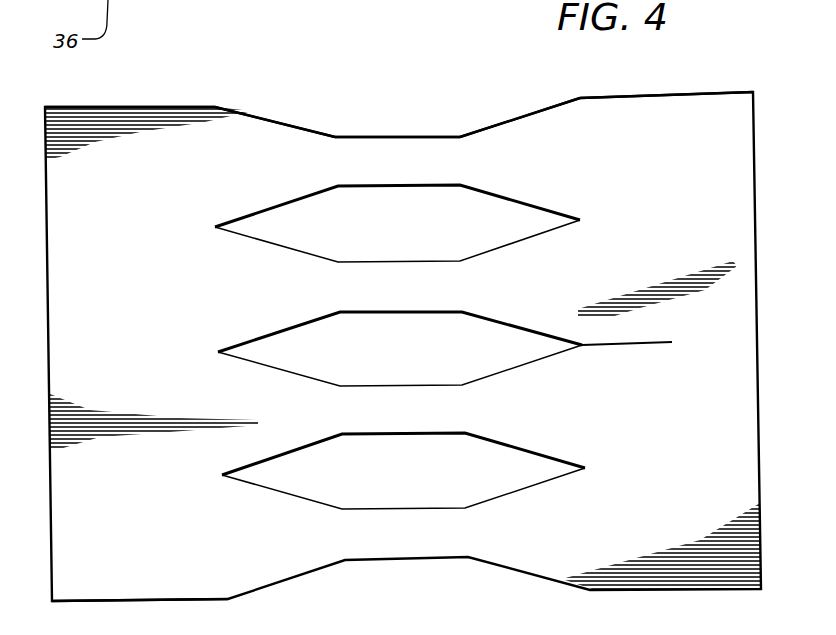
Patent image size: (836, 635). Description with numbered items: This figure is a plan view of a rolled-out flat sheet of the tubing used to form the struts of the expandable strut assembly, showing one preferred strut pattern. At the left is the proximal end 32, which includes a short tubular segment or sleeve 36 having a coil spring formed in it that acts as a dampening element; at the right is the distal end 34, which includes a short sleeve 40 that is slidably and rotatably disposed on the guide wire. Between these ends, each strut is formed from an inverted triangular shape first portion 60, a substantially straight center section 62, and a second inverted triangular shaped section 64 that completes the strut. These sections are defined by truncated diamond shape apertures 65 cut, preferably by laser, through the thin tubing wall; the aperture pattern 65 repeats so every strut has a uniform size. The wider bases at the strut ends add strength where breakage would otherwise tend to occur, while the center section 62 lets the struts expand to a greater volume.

The proximal end 32 is at (87, 538).
The distal end 34 is at (731, 112).
The sleeve 36 is at (143, 125).
The sleeve 40 is at (728, 358).
The first portion 60 is at (258, 132).
The center section 62 is at (462, 122).
The second inverted triangular shaped section 64 is at (530, 130).
The truncated diamond shape apertures 65 is at (488, 250).